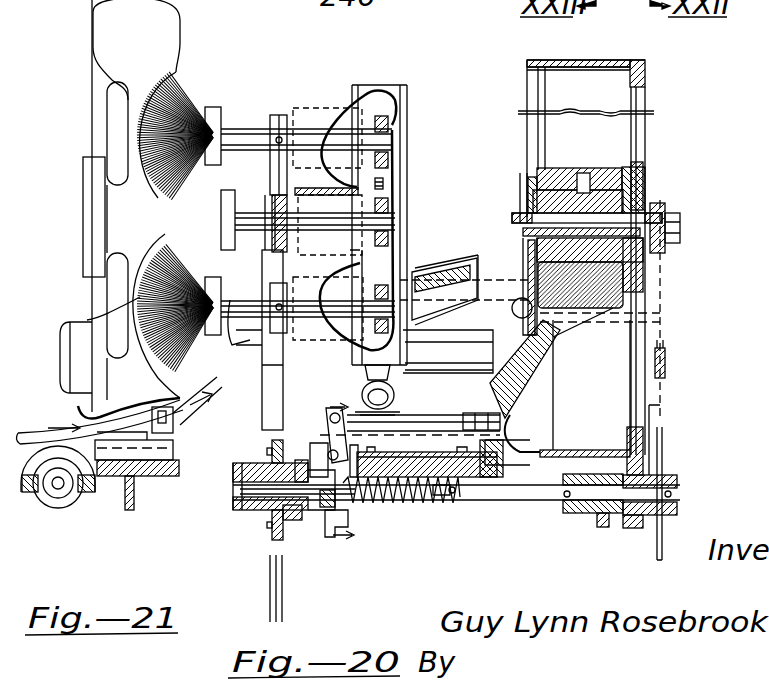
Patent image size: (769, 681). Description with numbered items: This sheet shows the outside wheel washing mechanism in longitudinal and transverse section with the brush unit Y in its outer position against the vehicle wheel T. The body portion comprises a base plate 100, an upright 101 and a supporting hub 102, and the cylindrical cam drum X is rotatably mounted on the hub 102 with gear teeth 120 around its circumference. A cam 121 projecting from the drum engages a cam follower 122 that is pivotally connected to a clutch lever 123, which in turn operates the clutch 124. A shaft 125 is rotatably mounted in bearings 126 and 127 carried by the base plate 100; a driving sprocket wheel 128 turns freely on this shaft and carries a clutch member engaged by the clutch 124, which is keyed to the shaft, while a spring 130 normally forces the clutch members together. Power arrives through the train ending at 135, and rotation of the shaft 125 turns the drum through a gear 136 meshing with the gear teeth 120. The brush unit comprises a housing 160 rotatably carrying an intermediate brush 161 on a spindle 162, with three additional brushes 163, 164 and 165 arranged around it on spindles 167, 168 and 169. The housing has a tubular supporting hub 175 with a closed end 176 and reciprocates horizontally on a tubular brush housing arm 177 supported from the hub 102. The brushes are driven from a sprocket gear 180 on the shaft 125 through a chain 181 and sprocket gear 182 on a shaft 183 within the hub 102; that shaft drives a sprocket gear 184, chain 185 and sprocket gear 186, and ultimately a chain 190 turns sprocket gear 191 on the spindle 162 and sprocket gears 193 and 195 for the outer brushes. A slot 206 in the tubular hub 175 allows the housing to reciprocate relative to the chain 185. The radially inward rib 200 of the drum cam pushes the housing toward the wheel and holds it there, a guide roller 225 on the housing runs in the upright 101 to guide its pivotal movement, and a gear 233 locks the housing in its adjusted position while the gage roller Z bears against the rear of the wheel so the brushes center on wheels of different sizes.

In FIG. 21, the wheel T is at (93, 20).
In FIG. 21, the brush unit Y is at (268, 66).
In FIG. 21, the gage roller Z is at (62, 345).
In FIG. 21, the cylindrical cam drum X is at (33, 438).
In FIG. 20, the cylindrical cam drum X is at (648, 74).
In FIG. 21, the base plate 100 is at (175, 470).
In FIG. 20, the base plate 100 is at (525, 505).
In FIG. 20, the upright 101 is at (485, 418).
In FIG. 20, the supporting hub 102 is at (648, 165).
In FIG. 20, the gear teeth 120 is at (655, 450).
In FIG. 21, the cam 121 is at (129, 397).
In FIG. 20, the cam 121 is at (528, 440).
In FIG. 21, the cam follower 122 is at (170, 420).
In FIG. 20, the cam follower 122 is at (550, 415).
In FIG. 21, the clutch lever 123 is at (170, 462).
In FIG. 20, the clutch lever 123 is at (335, 425).
In FIG. 21, the clutch 124 is at (65, 498).
In FIG. 20, the clutch 124 is at (325, 527).
In FIG. 21, the shaft 125 is at (50, 492).
In FIG. 20, the shaft 125 is at (238, 488).
In FIG. 20, the bearing 126 is at (258, 510).
In FIG. 20, the bearing 127 is at (585, 517).
In FIG. 20, the driving sprocket wheel 128 is at (268, 538).
In FIG. 20, the spring 130 is at (430, 505).
In FIG. 20, the source of power 135 is at (255, 598).
In FIG. 20, the gear 136 is at (640, 528).
In FIG. 20, the housing 160 is at (358, 98).
In FIG. 21, the intermediate brush 161 is at (162, 218).
In FIG. 20, the spindle 162 is at (291, 312).
In FIG. 21, the brush 163 is at (190, 95).
In FIG. 21, the brush 164 is at (92, 301).
In FIG. 21, the brush 165 is at (306, 150).
In FIG. 21, the spindle 167 is at (250, 135).
In FIG. 20, the spindle 168 is at (276, 349).
In FIG. 21, the spindle 169 is at (308, 208).
In FIG. 21, the tubular supporting hub 175 is at (255, 345).
In FIG. 21, the closed end 176 is at (255, 262).
In FIG. 20, the tubular brush housing arm 177 is at (497, 272).
In FIG. 20, the sprocket gear 180 is at (662, 545).
In FIG. 20, the chain 181 is at (668, 378).
In FIG. 20, the sprocket gear 182 is at (660, 210).
In FIG. 20, the shaft 183 is at (680, 222).
In FIG. 20, the sprocket gear 184 is at (520, 190).
In FIG. 20, the chain 185 is at (514, 302).
In FIG. 20, the sprocket gear 186 is at (540, 343).
In FIG. 20, the chain 190 is at (392, 178).
In FIG. 20, the sprocket gear 191 is at (395, 222).
In FIG. 20, the sprocket gear 193 is at (392, 130).
In FIG. 20, the sprocket gear 195 is at (446, 350).
In FIG. 20, the rib 200 is at (542, 78).
In FIG. 20, the slot 206 is at (444, 289).
In FIG. 20, the guide roller 225 is at (395, 392).
In FIG. 21, the gear 233 is at (268, 408).